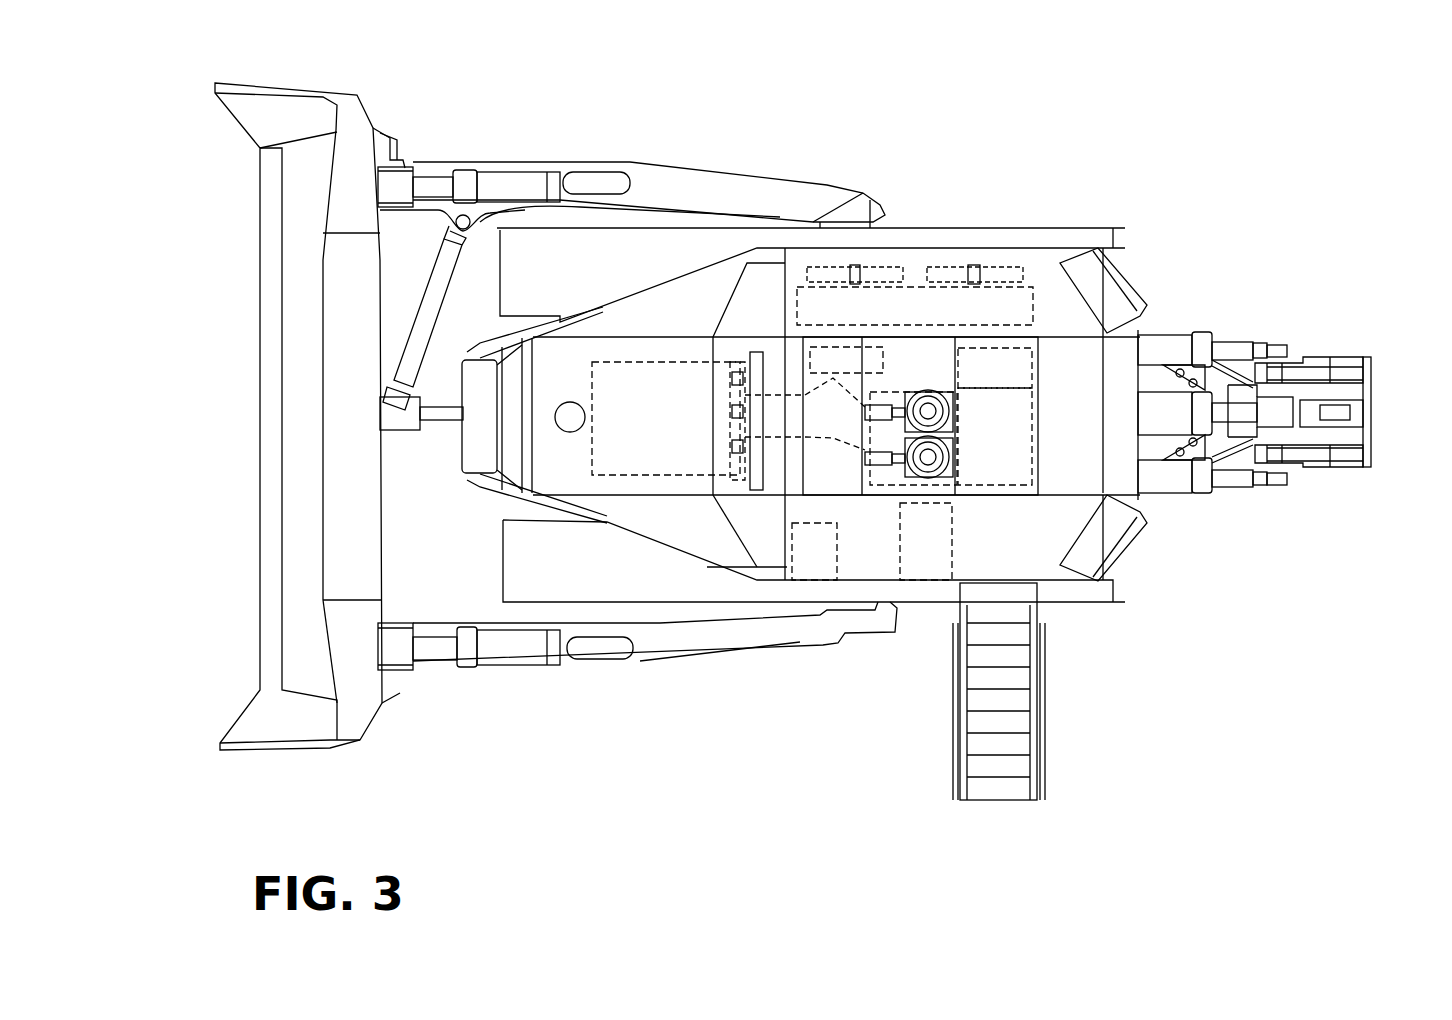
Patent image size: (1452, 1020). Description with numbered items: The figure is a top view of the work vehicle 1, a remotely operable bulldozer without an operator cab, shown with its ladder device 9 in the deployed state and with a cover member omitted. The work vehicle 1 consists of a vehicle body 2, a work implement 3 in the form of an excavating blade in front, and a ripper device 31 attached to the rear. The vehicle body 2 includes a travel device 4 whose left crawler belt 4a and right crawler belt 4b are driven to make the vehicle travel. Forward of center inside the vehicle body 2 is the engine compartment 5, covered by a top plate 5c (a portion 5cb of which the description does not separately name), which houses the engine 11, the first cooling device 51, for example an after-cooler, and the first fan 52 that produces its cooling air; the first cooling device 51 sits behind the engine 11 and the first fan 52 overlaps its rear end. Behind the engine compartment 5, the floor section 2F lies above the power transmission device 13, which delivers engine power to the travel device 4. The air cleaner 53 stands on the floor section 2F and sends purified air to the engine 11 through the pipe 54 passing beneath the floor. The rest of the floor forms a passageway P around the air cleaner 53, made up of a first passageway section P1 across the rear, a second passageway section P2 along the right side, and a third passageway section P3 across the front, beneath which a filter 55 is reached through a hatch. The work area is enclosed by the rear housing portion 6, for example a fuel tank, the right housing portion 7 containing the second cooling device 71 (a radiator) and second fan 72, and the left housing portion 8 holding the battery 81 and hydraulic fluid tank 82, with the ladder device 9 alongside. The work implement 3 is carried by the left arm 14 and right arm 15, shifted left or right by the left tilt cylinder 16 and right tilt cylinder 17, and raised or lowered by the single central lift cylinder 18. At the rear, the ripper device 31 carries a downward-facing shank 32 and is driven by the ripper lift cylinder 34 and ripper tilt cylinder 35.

The work vehicle 1 is at (1173, 222).
The vehicle body 2 is at (1167, 553).
The floor section 2F is at (885, 545).
The work implement 3 is at (257, 217).
The travel device 4 is at (513, 607).
The crawler belt 4a is at (573, 577).
The crawler belt 4b is at (577, 270).
The engine compartment 5 is at (643, 393).
The top plate 5c is at (583, 483).
The support bracket 5cb is at (730, 347).
The rear housing portion 6 is at (1117, 540).
The right housing portion 7 is at (1027, 267).
The left housing portion 8 is at (902, 585).
The ladder device 9 is at (1045, 745).
The engine 11 is at (673, 360).
The power transmission device 13 is at (1130, 250).
The left arm 14 is at (687, 665).
The right arm 15 is at (800, 177).
The left tilt cylinder 16 is at (517, 643).
The right tilt cylinder 17 is at (493, 185).
The lift cylinder 18 is at (555, 410).
The ripper device 31 is at (1267, 330).
The shank 32 is at (1337, 410).
The ripper lift cylinder 34 is at (1155, 413).
The ripper tilt cylinder 35 is at (1357, 560).
The first cooling device 51 is at (760, 465).
The first fan 52 is at (727, 437).
The air cleaner 53 is at (955, 423).
The pipe 54 is at (787, 470).
The filter 55 is at (767, 350).
The second cooling device 71 is at (1063, 263).
The second fan 72 is at (860, 265).
The battery 81 is at (820, 587).
The hydraulic fluid tank 82 is at (927, 580).
The passageway P is at (880, 52).
The first passageway section P1 is at (983, 417).
The second passageway section P2 is at (925, 367).
The third passageway section P3 is at (840, 420).